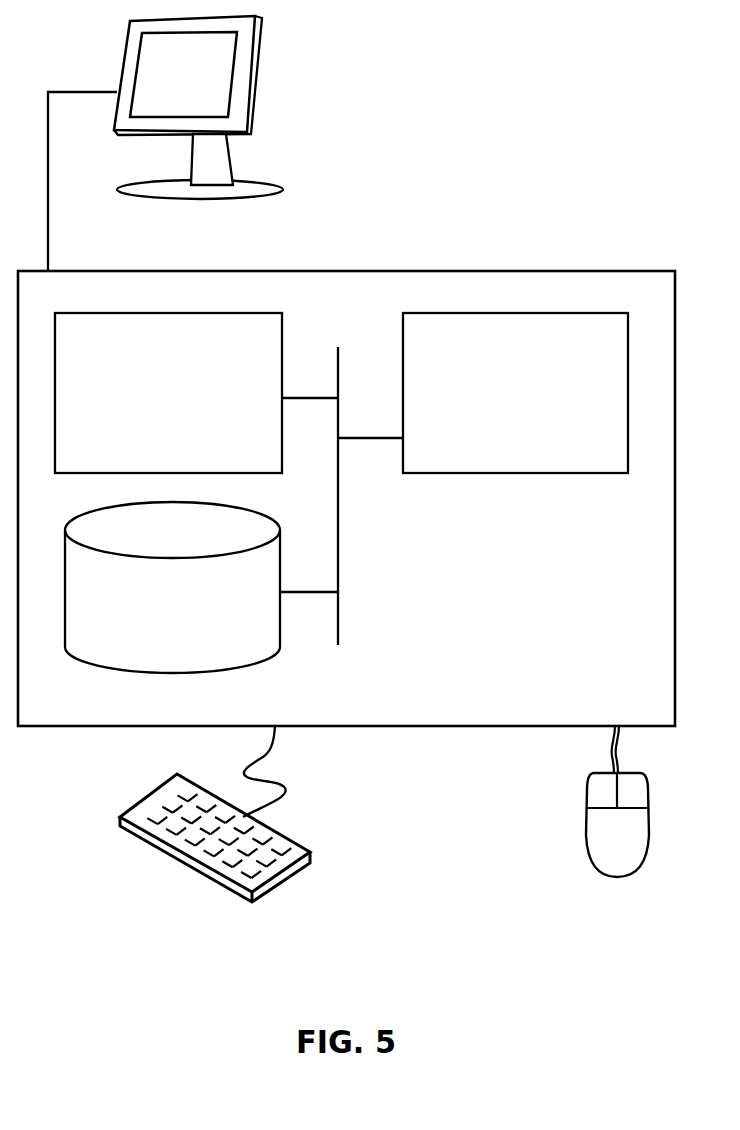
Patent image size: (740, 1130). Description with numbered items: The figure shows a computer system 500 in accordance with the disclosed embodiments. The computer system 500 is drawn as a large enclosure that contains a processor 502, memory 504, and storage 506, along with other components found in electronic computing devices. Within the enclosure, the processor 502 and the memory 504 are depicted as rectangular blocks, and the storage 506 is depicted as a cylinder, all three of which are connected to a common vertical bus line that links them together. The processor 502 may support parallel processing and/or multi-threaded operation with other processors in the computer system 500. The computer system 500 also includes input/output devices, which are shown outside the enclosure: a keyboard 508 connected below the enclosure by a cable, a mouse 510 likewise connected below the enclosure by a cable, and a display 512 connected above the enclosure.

The computer system 500 is at (393, 250).
The processor 502 is at (499, 408).
The memory 504 is at (147, 406).
The storage 506 is at (156, 618).
The keyboard 508 is at (140, 837).
The mouse 510 is at (596, 848).
The display 512 is at (165, 144).